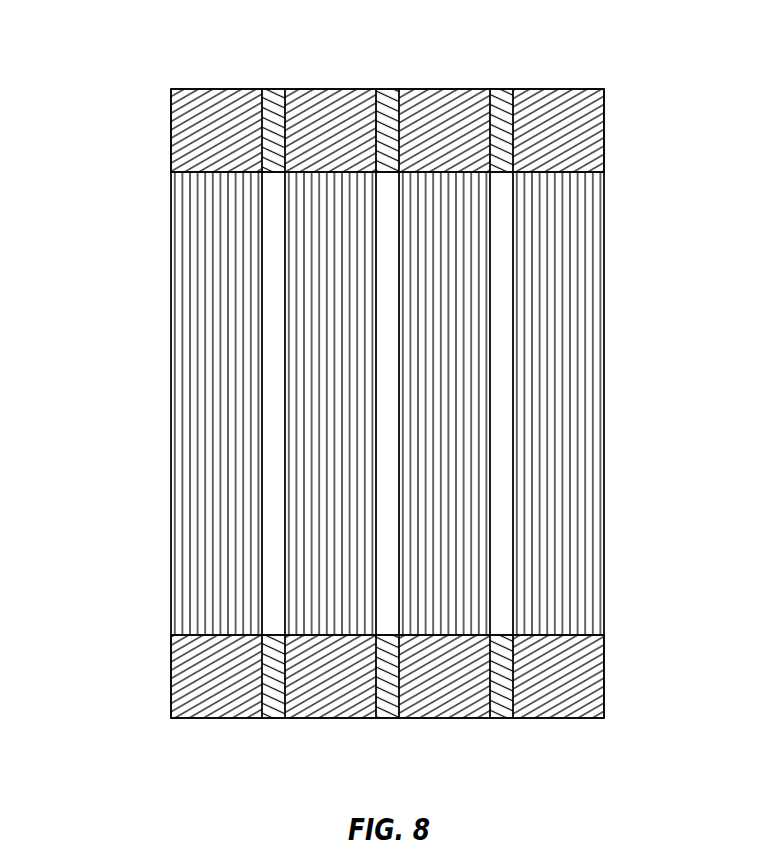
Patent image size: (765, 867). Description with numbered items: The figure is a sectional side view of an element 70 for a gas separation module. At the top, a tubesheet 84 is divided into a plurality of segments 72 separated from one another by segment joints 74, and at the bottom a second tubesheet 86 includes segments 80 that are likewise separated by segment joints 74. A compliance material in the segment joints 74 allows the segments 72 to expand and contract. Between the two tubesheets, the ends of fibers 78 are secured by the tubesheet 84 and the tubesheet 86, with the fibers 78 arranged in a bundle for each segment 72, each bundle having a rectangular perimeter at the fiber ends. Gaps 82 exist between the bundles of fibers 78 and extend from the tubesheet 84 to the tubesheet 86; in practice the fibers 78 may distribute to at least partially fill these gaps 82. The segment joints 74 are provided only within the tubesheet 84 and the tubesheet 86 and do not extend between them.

The element 70 is at (134, 38).
The segments 72 is at (201, 143).
The segment joints 74 is at (273, 89).
The fibers 78 is at (201, 475).
The segments 80 is at (201, 689).
The gaps 82 is at (274, 306).
The tubesheet 84 is at (613, 89).
The tubesheet 86 is at (613, 635).